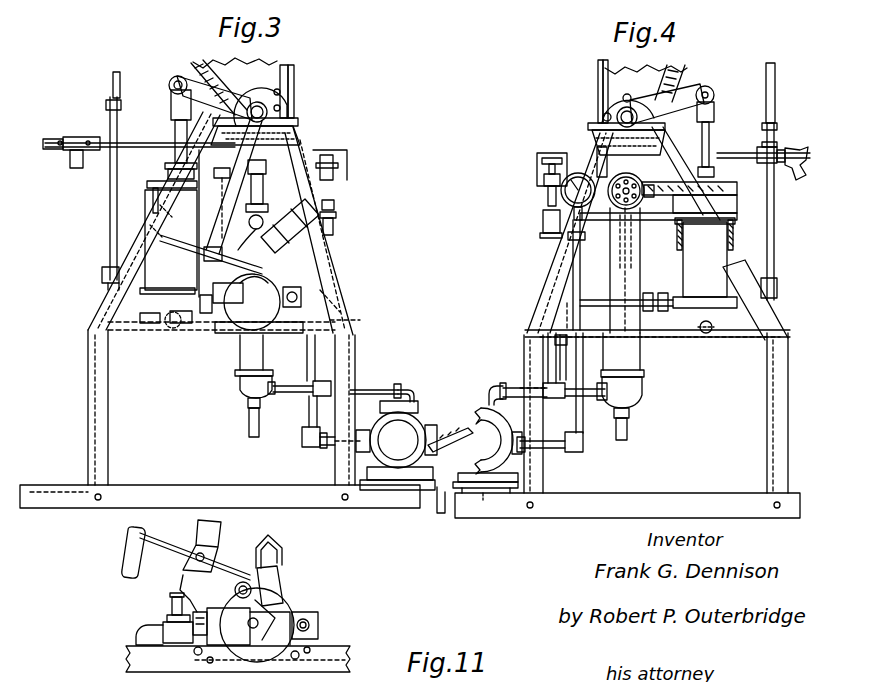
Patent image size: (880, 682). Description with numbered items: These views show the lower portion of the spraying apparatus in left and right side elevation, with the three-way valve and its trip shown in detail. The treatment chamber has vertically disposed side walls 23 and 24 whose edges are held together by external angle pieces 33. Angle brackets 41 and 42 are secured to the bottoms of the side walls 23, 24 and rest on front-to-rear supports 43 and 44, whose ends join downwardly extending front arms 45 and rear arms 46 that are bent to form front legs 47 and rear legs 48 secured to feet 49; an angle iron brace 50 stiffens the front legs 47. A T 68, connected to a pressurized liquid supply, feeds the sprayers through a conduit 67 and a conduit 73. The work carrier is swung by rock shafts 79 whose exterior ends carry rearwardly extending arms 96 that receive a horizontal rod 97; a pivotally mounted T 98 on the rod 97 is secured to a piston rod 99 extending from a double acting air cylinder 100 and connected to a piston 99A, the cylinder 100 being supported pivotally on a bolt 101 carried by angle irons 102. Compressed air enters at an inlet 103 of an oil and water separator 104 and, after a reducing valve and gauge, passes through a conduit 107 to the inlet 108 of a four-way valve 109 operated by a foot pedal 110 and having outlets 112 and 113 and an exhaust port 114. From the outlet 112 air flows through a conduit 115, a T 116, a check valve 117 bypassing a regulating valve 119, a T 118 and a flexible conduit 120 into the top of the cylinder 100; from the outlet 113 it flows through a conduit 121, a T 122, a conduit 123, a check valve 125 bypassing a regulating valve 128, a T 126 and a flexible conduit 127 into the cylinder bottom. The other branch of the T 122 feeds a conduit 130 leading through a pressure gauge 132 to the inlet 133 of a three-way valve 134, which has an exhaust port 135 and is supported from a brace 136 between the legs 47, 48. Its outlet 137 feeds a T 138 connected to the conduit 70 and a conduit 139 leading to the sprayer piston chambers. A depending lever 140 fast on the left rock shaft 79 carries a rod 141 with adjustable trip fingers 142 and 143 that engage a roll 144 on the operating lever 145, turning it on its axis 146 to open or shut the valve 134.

In FIG. 4, the side wall 23 is at (620, 80).
In FIG. 3, the side wall 24 is at (270, 78).
In FIG. 3, the angle pieces 33 is at (294, 88).
In FIG. 4, the angle pieces 33 is at (600, 63).
In FIG. 4, the angle bracket 41 is at (620, 103).
In FIG. 3, the angle bracket 42 is at (283, 100).
In FIG. 4, the support 43 is at (603, 130).
In FIG. 3, the support 44 is at (283, 137).
In FIG. 3, the front arm 45 is at (337, 293).
In FIG. 4, the front arm 45 is at (550, 285).
In FIG. 3, the rear arm 46 is at (147, 247).
In FIG. 3, the front leg 47 is at (360, 333).
In FIG. 4, the front leg 47 is at (535, 467).
In FIG. 3, the rear leg 48 is at (100, 403).
In FIG. 4, the rear leg 48 is at (777, 407).
In FIG. 3, the feet 49 is at (198, 500).
In FIG. 4, the feet 49 is at (720, 510).
In FIG. 3, the angle iron brace 50 is at (370, 442).
In FIG. 3, the conduit 67 is at (115, 80).
In FIG. 4, the conduit 67 is at (768, 87).
In FIG. 3, the T 68 is at (110, 133).
In FIG. 4, the T 68 is at (770, 150).
In FIG. 3, the conduit 70 is at (110, 185).
In FIG. 4, the conduit 70 is at (773, 63).
In FIG. 3, the conduit 73 is at (143, 147).
In FIG. 4, the conduit 73 is at (722, 155).
In FIG. 3, the rock shaft 79 is at (243, 100).
In FIG. 4, the rock shaft 79 is at (640, 93).
In FIG. 3, the arm 96 is at (203, 80).
In FIG. 4, the arm 96 is at (690, 93).
In FIG. 3, the horizontal rod 97 is at (168, 80).
In FIG. 4, the horizontal rod 97 is at (708, 90).
In FIG. 3, the T 98 is at (173, 107).
In FIG. 4, the T 98 is at (712, 110).
In FIG. 3, the piston rod 99 is at (172, 127).
In FIG. 4, the piston rod 99 is at (703, 138).
In FIG. 3, the piston 99A is at (157, 207).
In FIG. 4, the piston 99A is at (733, 233).
In FIG. 3, the double acting air cylinder 100 is at (168, 242).
In FIG. 4, the double acting air cylinder 100 is at (705, 257).
In FIG. 4, the bolt 101 is at (717, 337).
In FIG. 4, the angle irons 102 is at (687, 333).
In FIG. 4, the inlet 103 is at (603, 157).
In FIG. 3, the oil and water separator 104 is at (245, 392).
In FIG. 4, the oil and water separator 104 is at (630, 372).
In FIG. 3, the conduit 107 is at (290, 390).
In FIG. 4, the conduit 107 is at (578, 365).
In FIG. 3, the inlet 108 is at (333, 470).
In FIG. 4, the inlet 108 is at (515, 470).
In FIG. 3, the four-way valve 109 is at (399, 440).
In FIG. 4, the four-way valve 109 is at (485, 428).
In FIG. 3, the foot pedal 110 is at (453, 433).
In FIG. 3, the outlet 112 is at (392, 386).
In FIG. 4, the outlet 112 is at (490, 388).
In FIG. 3, the outlet 113 is at (408, 400).
In FIG. 3, the exhaust port 114 is at (370, 503).
In FIG. 4, the exhaust port 114 is at (483, 500).
In FIG. 4, the conduit 115 is at (567, 303).
In FIG. 4, the T 116 is at (547, 220).
In FIG. 4, the check valve 117 is at (587, 247).
In FIG. 4, the T 118 is at (637, 233).
In FIG. 4, the valve 119 is at (547, 192).
In FIG. 4, the flexible conduit 120 is at (640, 260).
In FIG. 3, the conduit 121 is at (367, 397).
In FIG. 3, the T 122 is at (313, 396).
In FIG. 4, the T 122 is at (559, 332).
In FIG. 3, the conduit 123 is at (333, 313).
In FIG. 3, the check valve 125 is at (337, 220).
In FIG. 3, the T 126 is at (337, 212).
In FIG. 4, the flexible conduit 127 is at (597, 277).
In FIG. 3, the valve 128 is at (333, 167).
In FIG. 3, the conduit 130 is at (267, 353).
In FIG. 4, the conduit 130 is at (630, 357).
In FIG. 3, the pressure gauge 132 is at (287, 247).
In FIG. 11, the inlet 133 is at (283, 553).
In FIG. 3, the three-way valve 134 is at (258, 303).
In FIG. 11, the three-way valve 134 is at (305, 640).
In FIG. 3, the exhaust port 135 is at (347, 320).
In FIG. 11, the exhaust port 135 is at (200, 660).
In FIG. 3, the brace 136 is at (165, 327).
In FIG. 11, the brace 136 is at (133, 648).
In FIG. 3, the outlet 137 is at (217, 323).
In FIG. 11, the outlet 137 is at (185, 587).
In FIG. 3, the T 138 is at (193, 327).
In FIG. 11, the T 138 is at (173, 630).
In FIG. 3, the conduit 139 is at (205, 270).
In FIG. 11, the conduit 139 is at (173, 607).
In FIG. 11, the depending lever 140 is at (220, 523).
In FIG. 11, the rod 141 is at (160, 543).
In FIG. 11, the trip finger 142 is at (268, 590).
In FIG. 11, the trip finger 143 is at (124, 557).
In FIG. 11, the roll 144 is at (235, 587).
In FIG. 11, the operating lever 145 is at (200, 612).
In FIG. 3, the axis 146 is at (247, 372).
In FIG. 11, the axis 146 is at (275, 618).